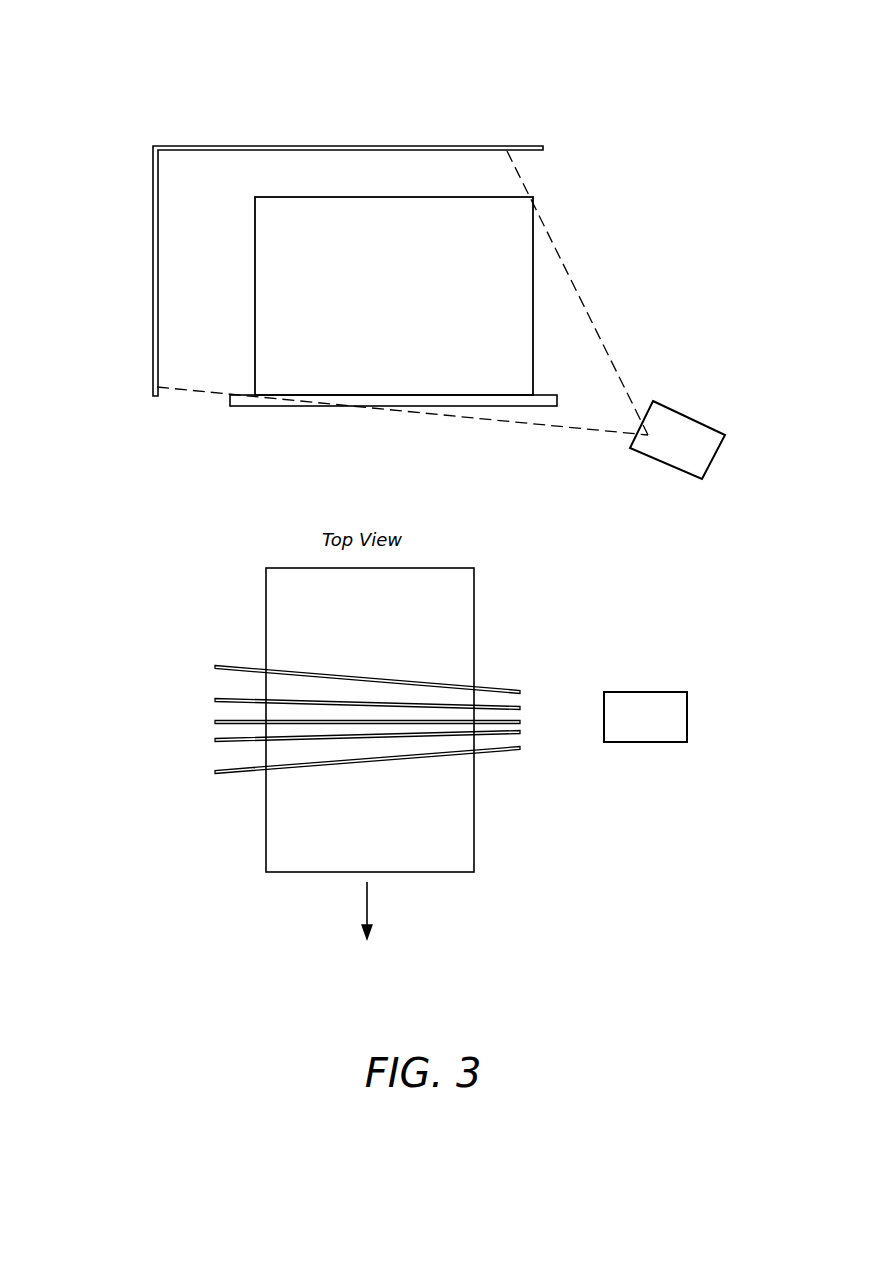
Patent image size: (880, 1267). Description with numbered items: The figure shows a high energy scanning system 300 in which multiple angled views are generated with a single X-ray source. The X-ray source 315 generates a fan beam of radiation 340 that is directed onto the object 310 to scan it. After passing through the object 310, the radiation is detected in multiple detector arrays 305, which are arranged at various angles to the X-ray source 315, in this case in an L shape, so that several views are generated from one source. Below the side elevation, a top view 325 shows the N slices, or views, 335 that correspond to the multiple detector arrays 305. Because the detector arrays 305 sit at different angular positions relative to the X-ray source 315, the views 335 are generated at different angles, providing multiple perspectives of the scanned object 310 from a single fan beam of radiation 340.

The scanning system 300 is at (44, 26).
The detector arrays 305 is at (257, 145).
The object 310 is at (270, 258).
The X-ray source 315 is at (663, 423).
The top view 325 is at (274, 608).
The slices or views 335 is at (222, 668).
The fan beam of radiation 340 is at (554, 240).